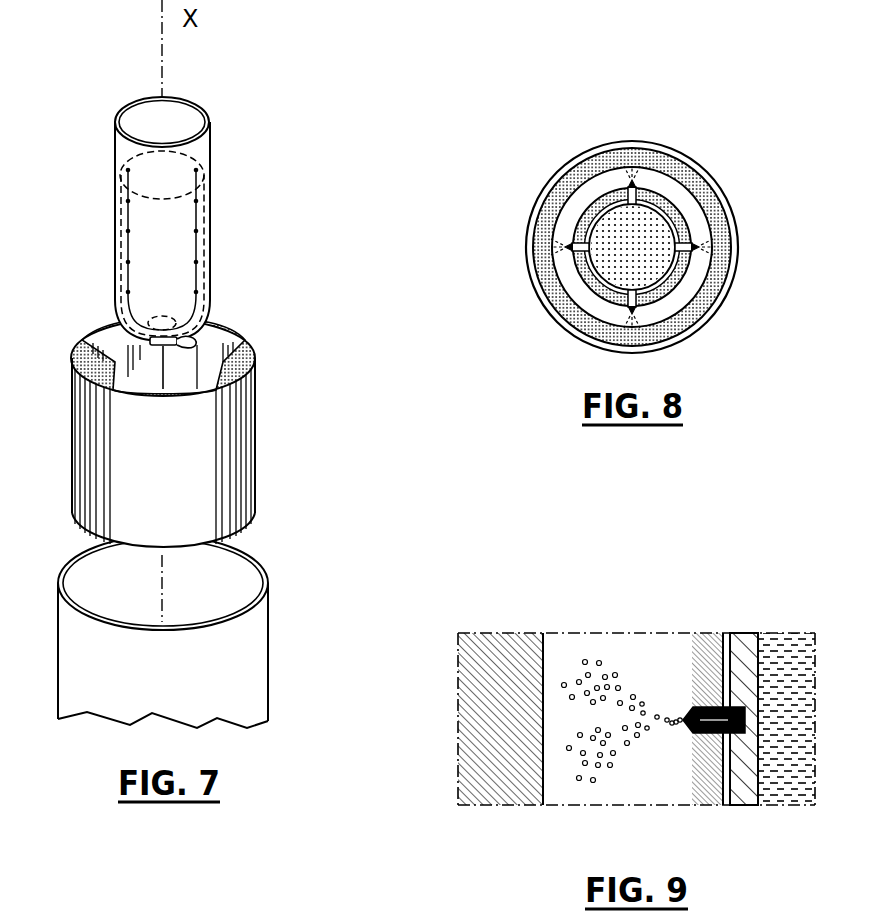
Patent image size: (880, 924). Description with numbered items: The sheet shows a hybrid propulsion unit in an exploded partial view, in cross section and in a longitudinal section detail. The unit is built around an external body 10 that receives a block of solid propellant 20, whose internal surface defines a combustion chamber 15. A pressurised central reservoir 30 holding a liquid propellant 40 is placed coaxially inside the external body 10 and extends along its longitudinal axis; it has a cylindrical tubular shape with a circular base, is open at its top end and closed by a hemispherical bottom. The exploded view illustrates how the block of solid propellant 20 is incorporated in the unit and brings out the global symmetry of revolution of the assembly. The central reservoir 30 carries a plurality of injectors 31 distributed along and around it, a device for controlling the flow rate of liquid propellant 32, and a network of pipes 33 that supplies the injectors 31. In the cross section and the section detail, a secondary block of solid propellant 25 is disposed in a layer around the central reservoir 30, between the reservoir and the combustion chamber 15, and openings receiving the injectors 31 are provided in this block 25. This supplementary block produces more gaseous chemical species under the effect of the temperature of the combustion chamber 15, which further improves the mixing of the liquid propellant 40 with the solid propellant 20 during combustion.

In FIG. 7, the external body 10 is at (268, 665).
In FIG. 8, the external body 10 is at (737, 238).
In FIG. 8, the combustion chamber 15 is at (685, 208).
In FIG. 9, the combustion chamber 15 is at (630, 645).
In FIG. 7, the solid propellant 20 is at (255, 443).
In FIG. 8, the solid propellant 20 is at (718, 278).
In FIG. 9, the solid propellant 20 is at (507, 642).
In FIG. 8, the secondary block of solid propellant 25 is at (578, 262).
In FIG. 9, the secondary block of solid propellant 25 is at (706, 640).
In FIG. 7, the central reservoir 30 is at (210, 183).
In FIG. 9, the central reservoir 30 is at (748, 640).
In FIG. 7, the injectors 31 is at (197, 262).
In FIG. 8, the injectors 31 is at (636, 190).
In FIG. 7, the device for controlling the flow rate of liquid propellant 32 is at (192, 339).
In FIG. 7, the network of pipes 33 is at (125, 245).
In FIG. 9, the network of pipes 33 is at (723, 805).
In FIG. 7, the liquid propellant 40 is at (208, 223).
In FIG. 8, the liquid propellant 40 is at (610, 225).
In FIG. 9, the liquid propellant 40 is at (790, 640).